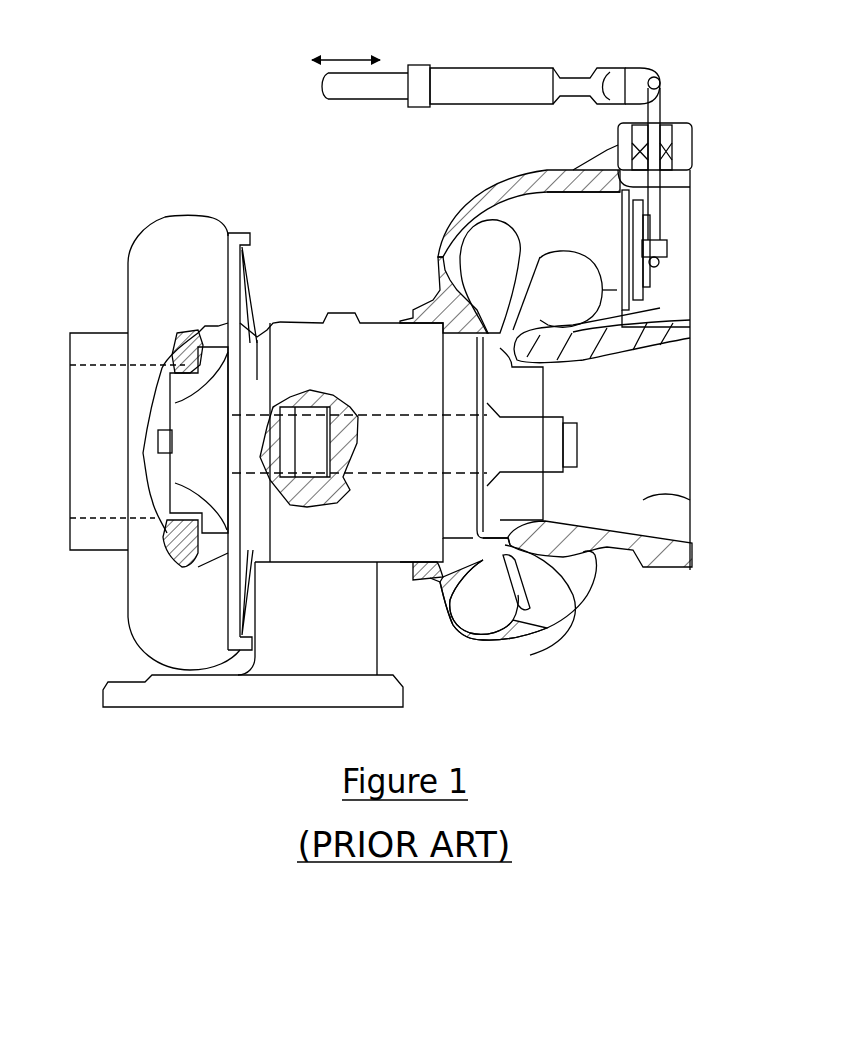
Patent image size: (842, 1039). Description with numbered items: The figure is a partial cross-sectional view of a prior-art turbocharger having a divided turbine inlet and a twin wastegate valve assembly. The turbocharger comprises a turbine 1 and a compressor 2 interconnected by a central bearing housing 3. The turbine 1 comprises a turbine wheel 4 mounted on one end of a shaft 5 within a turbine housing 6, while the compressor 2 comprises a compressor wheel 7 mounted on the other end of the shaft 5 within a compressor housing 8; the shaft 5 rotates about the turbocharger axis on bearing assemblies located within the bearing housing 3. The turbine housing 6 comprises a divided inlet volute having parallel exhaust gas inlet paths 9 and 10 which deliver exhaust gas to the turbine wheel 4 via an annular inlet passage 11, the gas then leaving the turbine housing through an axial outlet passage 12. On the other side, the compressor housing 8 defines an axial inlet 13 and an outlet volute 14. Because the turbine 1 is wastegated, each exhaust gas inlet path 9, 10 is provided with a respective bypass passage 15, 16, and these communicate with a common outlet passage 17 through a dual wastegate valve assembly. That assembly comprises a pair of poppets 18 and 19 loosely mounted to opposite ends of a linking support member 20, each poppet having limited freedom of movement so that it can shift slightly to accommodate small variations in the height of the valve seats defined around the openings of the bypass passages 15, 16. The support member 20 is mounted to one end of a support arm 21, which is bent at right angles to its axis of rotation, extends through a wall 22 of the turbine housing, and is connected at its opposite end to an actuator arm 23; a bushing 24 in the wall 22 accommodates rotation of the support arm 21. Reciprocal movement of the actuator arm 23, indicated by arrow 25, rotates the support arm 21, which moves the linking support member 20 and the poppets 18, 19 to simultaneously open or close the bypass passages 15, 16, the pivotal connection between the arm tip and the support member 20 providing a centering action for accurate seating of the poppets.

The turbine 1 is at (583, 602).
The compressor 2 is at (203, 214).
The central bearing housing 3 is at (292, 318).
The turbine wheel 4 is at (532, 395).
The shaft 5 is at (343, 443).
The turbine housing 6 is at (517, 615).
The compressor wheel 7 is at (192, 460).
The compressor housing 8 is at (152, 617).
The exhaust gas inlet path 9 is at (572, 305).
The exhaust gas inlet path 10 is at (482, 250).
The annular inlet passage 11 is at (503, 547).
The axial outlet passage 12 is at (690, 500).
The axial inlet 13 is at (83, 490).
The outlet volute 14 is at (363, 633).
The bypass passage 15 is at (598, 348).
The bypass passage 16 is at (582, 213).
The common outlet passage 17 is at (673, 290).
The poppet 18 is at (680, 318).
The poppet 19 is at (657, 193).
The linking support member 20 is at (657, 267).
The support arm 21 is at (657, 112).
The wall 22 is at (683, 137).
The actuator arm 23 is at (495, 90).
The bushing 24 is at (670, 148).
The arrow 25 is at (350, 58).